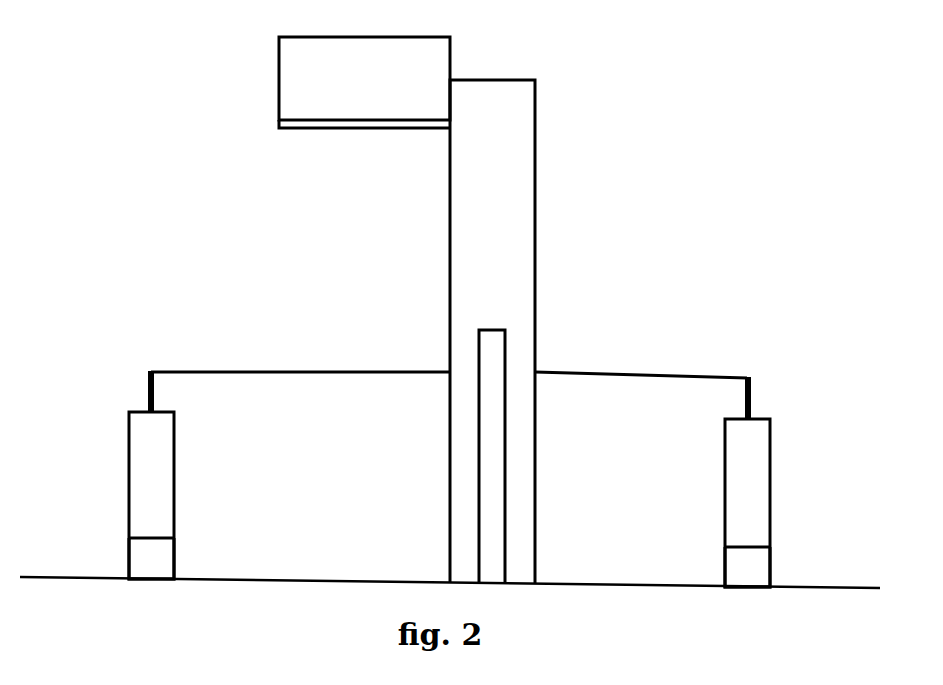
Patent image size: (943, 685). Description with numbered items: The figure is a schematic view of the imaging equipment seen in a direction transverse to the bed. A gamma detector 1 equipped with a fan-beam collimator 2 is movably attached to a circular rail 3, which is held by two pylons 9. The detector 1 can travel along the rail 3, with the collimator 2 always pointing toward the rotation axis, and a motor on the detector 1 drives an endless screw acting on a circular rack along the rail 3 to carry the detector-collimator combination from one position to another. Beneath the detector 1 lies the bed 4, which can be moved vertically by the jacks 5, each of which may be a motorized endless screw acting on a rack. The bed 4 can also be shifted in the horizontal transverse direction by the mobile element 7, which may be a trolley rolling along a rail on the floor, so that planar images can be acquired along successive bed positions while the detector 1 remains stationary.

The gamma detector 1 is at (364, 78).
The fan-beam collimator 2 is at (364, 140).
The circular rail 3 is at (492, 332).
The bed 4 is at (449, 377).
The jacks 5 is at (449, 499).
The mobile element 7 is at (449, 562).
The pylons 9 is at (492, 457).